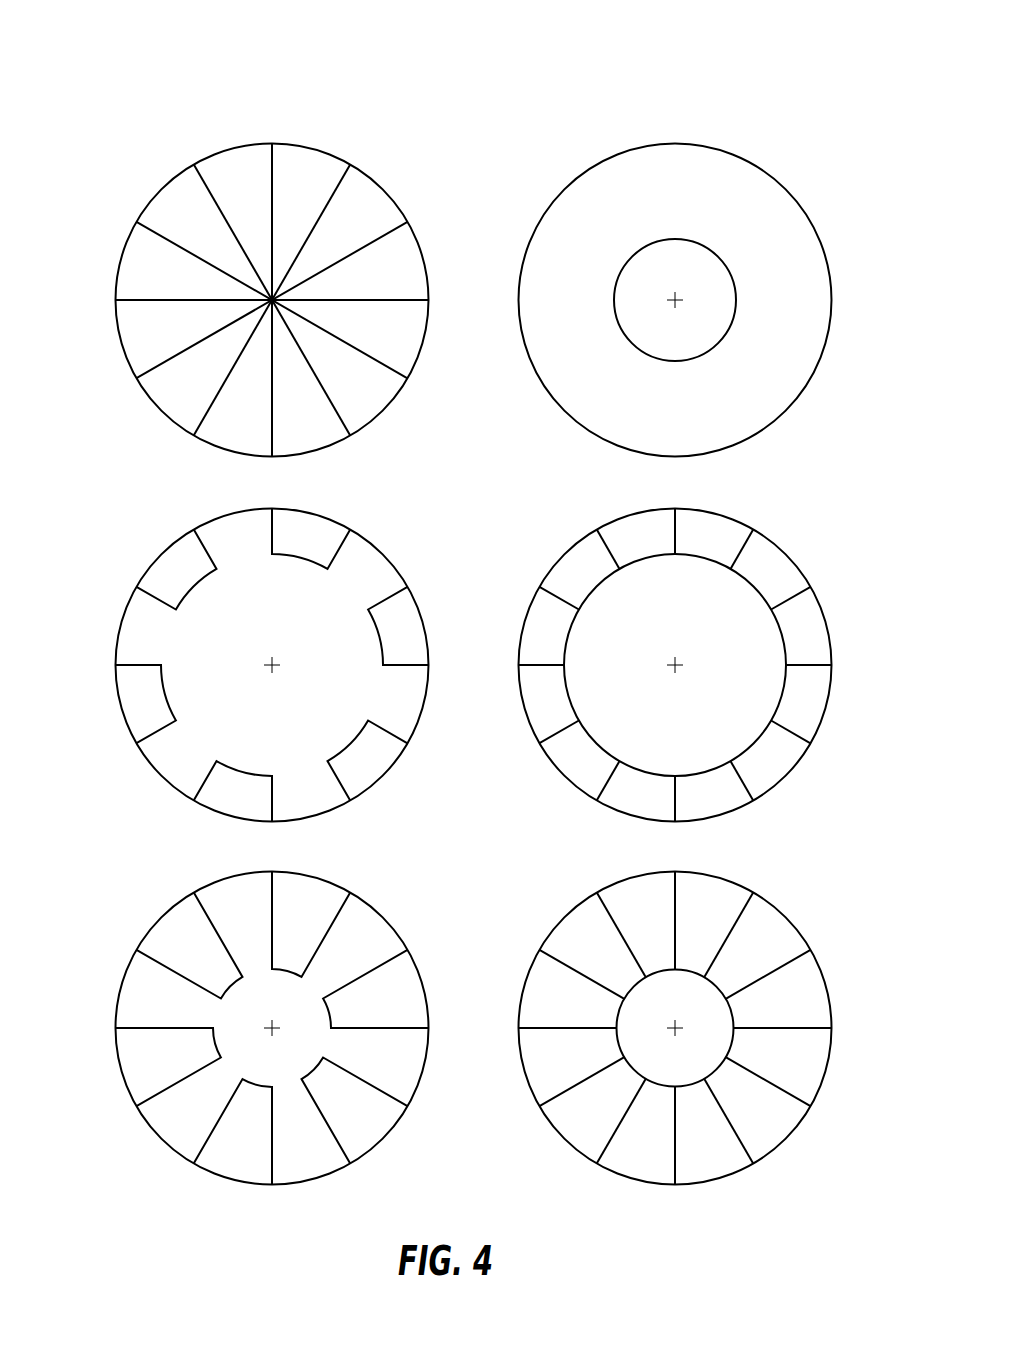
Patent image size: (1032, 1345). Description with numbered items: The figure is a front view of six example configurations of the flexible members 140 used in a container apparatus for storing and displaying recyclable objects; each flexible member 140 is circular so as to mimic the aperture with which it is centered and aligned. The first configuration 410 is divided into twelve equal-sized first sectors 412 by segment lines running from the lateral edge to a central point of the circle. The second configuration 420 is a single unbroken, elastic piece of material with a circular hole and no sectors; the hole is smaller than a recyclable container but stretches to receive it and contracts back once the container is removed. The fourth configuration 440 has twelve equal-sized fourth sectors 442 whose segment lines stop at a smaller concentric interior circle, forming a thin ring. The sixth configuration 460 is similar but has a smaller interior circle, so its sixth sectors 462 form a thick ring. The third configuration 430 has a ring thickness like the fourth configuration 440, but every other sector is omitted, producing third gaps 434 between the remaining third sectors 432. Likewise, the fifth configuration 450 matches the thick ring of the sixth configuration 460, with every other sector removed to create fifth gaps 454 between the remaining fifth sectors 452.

The flexible member 140 is at (182, 44).
The first configuration 410 is at (151, 193).
The first sectors 412 is at (132, 272).
The second configuration 420 is at (554, 196).
The third configuration 430 is at (151, 558).
The third sectors 432 is at (135, 697).
The third gaps 434 is at (147, 633).
The fourth configuration 440 is at (554, 561).
The fourth sectors 442 is at (800, 632).
The fifth configuration 450 is at (151, 921).
The fifth sectors 452 is at (135, 1060).
The fifth gaps 454 is at (147, 996).
The sixth configuration 460 is at (554, 924).
The sixth sectors 462 is at (800, 992).